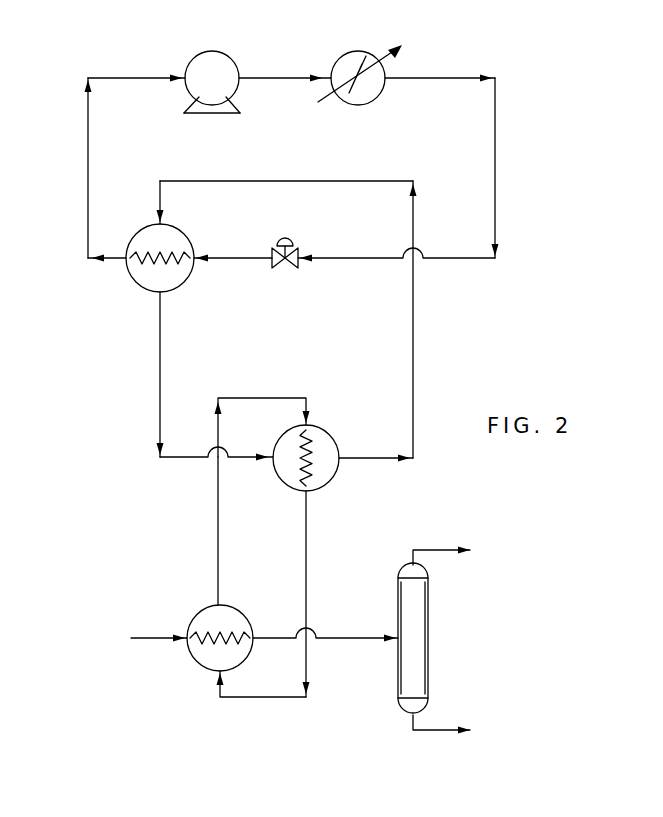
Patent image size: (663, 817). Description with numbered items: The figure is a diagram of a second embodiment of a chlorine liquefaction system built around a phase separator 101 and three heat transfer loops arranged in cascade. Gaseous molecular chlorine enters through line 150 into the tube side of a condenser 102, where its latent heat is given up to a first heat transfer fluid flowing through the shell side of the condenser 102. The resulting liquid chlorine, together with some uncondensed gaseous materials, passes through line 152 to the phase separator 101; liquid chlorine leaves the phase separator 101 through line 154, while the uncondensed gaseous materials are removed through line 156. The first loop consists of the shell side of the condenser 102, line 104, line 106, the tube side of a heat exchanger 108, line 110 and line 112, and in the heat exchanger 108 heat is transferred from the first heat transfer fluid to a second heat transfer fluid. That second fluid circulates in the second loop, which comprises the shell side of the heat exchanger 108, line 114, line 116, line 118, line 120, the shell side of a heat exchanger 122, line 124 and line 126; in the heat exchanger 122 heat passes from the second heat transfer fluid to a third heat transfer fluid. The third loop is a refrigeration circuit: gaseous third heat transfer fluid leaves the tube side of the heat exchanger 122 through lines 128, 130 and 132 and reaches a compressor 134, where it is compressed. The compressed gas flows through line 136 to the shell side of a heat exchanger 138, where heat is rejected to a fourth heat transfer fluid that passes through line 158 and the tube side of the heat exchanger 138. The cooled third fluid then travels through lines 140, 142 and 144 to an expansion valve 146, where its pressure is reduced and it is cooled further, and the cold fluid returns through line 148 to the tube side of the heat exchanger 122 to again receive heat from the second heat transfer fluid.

The phase separator 101 is at (427, 650).
The condenser 102 is at (197, 612).
The line 104 is at (218, 530).
The line 106 is at (256, 396).
The heat exchanger 108 is at (328, 430).
The line 110 is at (308, 568).
The line 112 is at (268, 698).
The line 114 is at (360, 460).
The line 116 is at (415, 356).
The line 118 is at (310, 181).
The line 120 is at (158, 205).
The heat exchanger 122 is at (185, 233).
The line 124 is at (157, 362).
The line 126 is at (190, 460).
The line 128 is at (115, 262).
The line 130 is at (88, 170).
The line 132 is at (128, 77).
The compressor 134 is at (211, 50).
The line 136 is at (296, 75).
The heat exchanger 138 is at (350, 50).
The line 140 is at (430, 76).
The line 142 is at (497, 170).
The line 144 is at (326, 260).
The expansion valve 146 is at (288, 238).
The line 148 is at (254, 262).
The line 150 is at (150, 640).
The line 152 is at (368, 636).
The line 154 is at (448, 730).
The line 156 is at (440, 548).
The line 158 is at (322, 100).